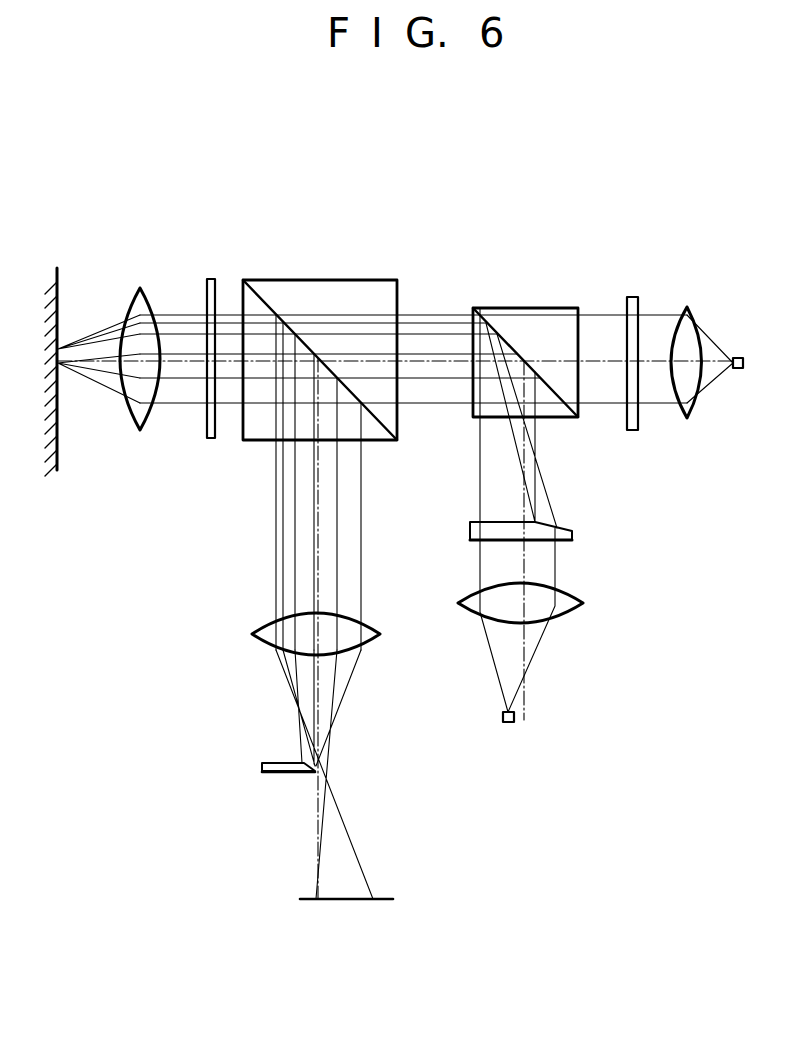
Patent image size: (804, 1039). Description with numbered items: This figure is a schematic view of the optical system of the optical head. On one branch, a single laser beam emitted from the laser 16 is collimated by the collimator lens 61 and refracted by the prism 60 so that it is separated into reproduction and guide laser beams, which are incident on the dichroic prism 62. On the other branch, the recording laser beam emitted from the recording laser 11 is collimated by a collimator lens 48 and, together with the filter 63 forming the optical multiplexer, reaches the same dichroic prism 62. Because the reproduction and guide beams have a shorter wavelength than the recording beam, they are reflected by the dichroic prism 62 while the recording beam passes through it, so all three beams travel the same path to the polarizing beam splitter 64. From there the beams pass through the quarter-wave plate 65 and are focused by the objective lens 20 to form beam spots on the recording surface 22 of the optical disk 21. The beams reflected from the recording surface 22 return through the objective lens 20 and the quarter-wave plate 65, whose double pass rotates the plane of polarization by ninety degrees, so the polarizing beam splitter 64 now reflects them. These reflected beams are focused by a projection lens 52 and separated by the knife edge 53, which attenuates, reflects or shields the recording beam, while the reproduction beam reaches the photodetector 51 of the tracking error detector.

The recording laser 11 is at (738, 357).
The laser 16 is at (510, 724).
The objective lens 20 is at (142, 292).
The optical disk 21 is at (66, 306).
The recording surface 22 is at (58, 438).
The collimator lens 48 is at (688, 306).
The photodetector 51 is at (350, 903).
The projection lens 52 is at (252, 634).
The knife edge 53 is at (283, 773).
The prism 60 is at (573, 533).
The collimator lens 61 is at (583, 603).
The dichroic prism 62 is at (518, 308).
The filter 63 is at (631, 297).
The polarizing beam splitter 64 is at (331, 280).
The λ/4 plate 65 is at (212, 279).